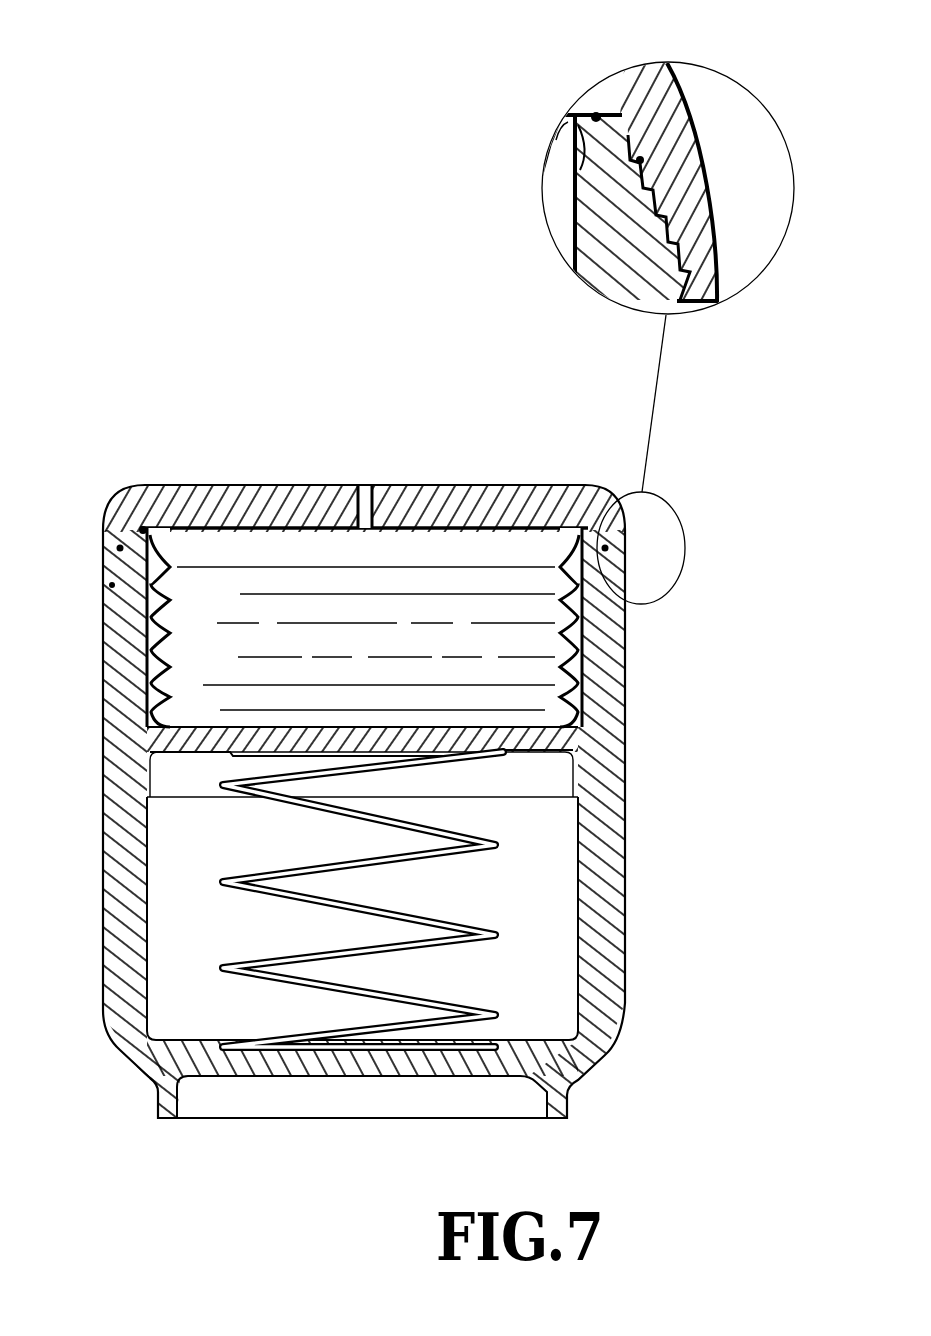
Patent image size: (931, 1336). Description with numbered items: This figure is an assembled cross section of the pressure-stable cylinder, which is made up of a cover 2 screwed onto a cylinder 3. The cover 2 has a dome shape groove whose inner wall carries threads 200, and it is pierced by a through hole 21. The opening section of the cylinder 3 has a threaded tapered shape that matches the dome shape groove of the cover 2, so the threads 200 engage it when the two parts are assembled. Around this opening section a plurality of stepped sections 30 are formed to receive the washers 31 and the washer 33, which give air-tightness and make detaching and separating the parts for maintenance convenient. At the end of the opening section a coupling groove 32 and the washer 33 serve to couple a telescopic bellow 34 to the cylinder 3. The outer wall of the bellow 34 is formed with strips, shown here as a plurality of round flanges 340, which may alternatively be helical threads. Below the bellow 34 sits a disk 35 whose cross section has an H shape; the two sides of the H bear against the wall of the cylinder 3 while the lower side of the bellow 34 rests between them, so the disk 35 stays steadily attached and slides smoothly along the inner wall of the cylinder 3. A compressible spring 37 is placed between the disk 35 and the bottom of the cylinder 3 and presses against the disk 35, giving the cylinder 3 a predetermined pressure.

The cover 2 is at (278, 492).
The cylinder 3 is at (106, 797).
The through hole 21 is at (373, 490).
The stepped sections 30 is at (662, 218).
The washers 31 is at (122, 547).
The coupling groove 32 is at (580, 195).
The washer 33 is at (143, 526).
The telescopic bellow 34 is at (163, 528).
The disk 35 is at (133, 730).
The compressible spring 37 is at (223, 883).
The threads 200 is at (110, 590).
The round flange 340 is at (143, 602).